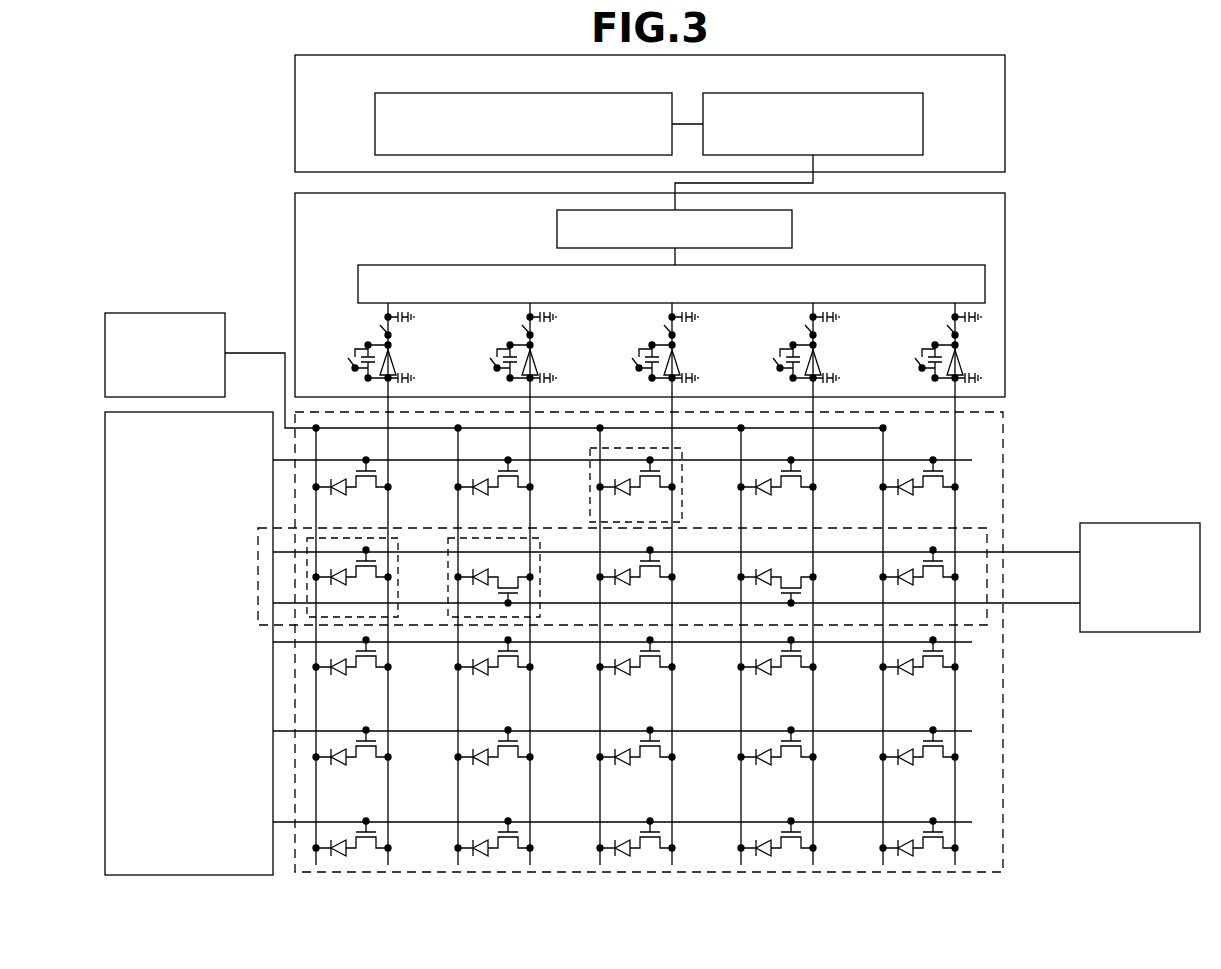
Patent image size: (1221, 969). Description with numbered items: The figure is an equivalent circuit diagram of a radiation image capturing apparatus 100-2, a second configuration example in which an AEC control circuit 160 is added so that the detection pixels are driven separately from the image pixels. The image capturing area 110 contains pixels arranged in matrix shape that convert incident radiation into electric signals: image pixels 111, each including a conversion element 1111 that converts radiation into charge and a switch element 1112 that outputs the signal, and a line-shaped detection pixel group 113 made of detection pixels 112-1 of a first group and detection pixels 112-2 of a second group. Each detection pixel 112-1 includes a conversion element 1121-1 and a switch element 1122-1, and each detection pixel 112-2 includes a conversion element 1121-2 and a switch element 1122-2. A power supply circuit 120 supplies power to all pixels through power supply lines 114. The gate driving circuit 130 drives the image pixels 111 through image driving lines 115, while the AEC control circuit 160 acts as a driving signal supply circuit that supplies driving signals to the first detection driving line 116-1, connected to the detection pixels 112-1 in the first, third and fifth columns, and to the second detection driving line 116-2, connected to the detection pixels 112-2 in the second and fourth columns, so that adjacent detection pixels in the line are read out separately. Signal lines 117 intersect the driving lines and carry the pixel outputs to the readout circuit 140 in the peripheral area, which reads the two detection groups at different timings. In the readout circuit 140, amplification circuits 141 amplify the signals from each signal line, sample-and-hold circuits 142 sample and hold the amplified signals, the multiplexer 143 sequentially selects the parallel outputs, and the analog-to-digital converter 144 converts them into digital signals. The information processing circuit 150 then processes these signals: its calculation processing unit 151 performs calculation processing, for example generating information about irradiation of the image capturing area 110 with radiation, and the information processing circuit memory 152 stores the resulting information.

The radiation image capturing apparatus 100-2 is at (164, 122).
The image capturing area 110 is at (1003, 755).
The image pixel 111 is at (629, 476).
The conversion element 1111 is at (615, 479).
The switch element 1112 is at (605, 484).
The detection pixel of first group 112-1 is at (298, 708).
The detection pixel of second group 112-2 is at (500, 708).
The conversion element 1121-1 is at (337, 566).
The conversion element 1121-2 is at (478, 568).
The switch element 1122-1 is at (364, 569).
The switch element 1122-2 is at (510, 584).
The line-shaped detection pixel group 113 is at (612, 708).
The power supply line 114 is at (258, 352).
The image driving line 115 is at (972, 460).
The first detection driving line 116-1 is at (1042, 552).
The second detection driving line 116-2 is at (1044, 605).
The signal line 117 is at (955, 807).
The power supply circuit 120 is at (166, 313).
The gate driving circuit 130 is at (189, 875).
The readout circuit 140 is at (295, 212).
The amplification circuit 141 is at (428, 343).
The sample-and-hold circuit 142 is at (428, 312).
The multiplexer 143 is at (985, 284).
The analog-to-digital converter 144 is at (792, 229).
The information processing circuit 150 is at (616, 132).
The calculation processing unit 151 is at (923, 125).
The information processing circuit memory 152 is at (375, 125).
The AEC control circuit 160 is at (1140, 523).